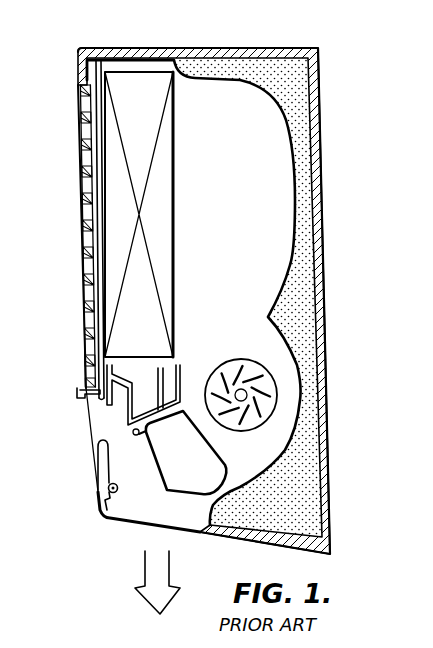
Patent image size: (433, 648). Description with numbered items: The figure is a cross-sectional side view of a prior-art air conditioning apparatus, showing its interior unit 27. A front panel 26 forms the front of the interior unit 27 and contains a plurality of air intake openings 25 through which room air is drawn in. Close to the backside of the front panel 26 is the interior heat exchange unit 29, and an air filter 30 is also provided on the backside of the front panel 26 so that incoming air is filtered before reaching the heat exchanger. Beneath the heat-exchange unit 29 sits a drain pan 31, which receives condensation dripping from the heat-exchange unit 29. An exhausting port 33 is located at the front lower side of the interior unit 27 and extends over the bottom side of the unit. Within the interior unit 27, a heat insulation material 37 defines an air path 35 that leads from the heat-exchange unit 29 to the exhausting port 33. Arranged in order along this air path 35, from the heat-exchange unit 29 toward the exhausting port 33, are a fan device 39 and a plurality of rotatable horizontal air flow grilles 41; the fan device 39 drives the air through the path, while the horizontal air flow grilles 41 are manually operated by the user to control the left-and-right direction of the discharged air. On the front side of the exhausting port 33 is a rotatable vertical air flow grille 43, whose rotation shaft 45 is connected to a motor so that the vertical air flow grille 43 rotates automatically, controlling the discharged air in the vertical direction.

The air intake openings 25 is at (82, 214).
The front panel 26 is at (79, 127).
The interior unit 27 is at (199, 47).
The interior heat exchange unit 29 is at (176, 172).
The air filter 30 is at (80, 391).
The drain pan 31 is at (128, 405).
The exhausting port 33 is at (112, 518).
The air path 35 is at (263, 181).
The heat insulation material 37 is at (296, 229).
The fan device 39 is at (262, 359).
The horizontal air flow grilles 41 is at (226, 464).
The vertical air flow grille 43 is at (95, 458).
The rotation shaft 45 is at (109, 489).